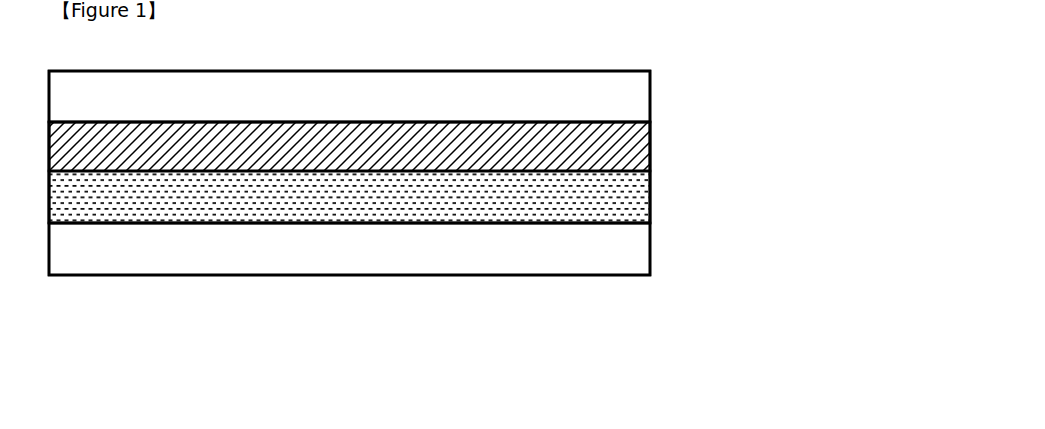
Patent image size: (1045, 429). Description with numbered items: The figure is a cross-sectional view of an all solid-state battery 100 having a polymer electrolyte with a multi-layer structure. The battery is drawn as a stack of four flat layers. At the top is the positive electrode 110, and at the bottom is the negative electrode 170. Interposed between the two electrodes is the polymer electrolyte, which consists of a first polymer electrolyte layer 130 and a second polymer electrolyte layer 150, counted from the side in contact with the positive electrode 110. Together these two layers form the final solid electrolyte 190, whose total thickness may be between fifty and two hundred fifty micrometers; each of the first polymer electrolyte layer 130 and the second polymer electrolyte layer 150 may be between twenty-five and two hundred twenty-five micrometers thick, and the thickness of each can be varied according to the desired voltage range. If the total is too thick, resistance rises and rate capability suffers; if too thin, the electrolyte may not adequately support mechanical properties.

The all solid-state battery 100 is at (486, 233).
The positive electrode 110 is at (651, 94).
The first polymer electrolyte layer 130 is at (651, 145).
The second polymer electrolyte layer 150 is at (651, 197).
The negative electrode 170 is at (651, 247).
The solid electrolyte 190 is at (486, 169).